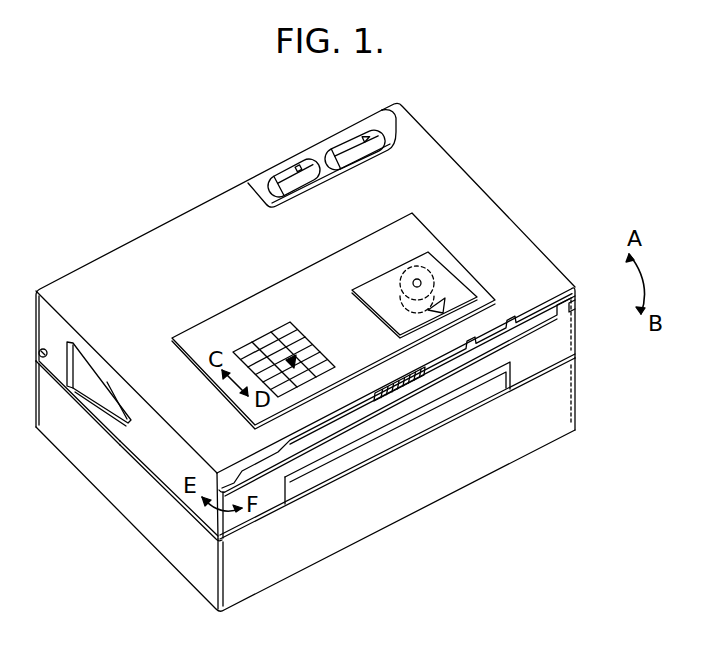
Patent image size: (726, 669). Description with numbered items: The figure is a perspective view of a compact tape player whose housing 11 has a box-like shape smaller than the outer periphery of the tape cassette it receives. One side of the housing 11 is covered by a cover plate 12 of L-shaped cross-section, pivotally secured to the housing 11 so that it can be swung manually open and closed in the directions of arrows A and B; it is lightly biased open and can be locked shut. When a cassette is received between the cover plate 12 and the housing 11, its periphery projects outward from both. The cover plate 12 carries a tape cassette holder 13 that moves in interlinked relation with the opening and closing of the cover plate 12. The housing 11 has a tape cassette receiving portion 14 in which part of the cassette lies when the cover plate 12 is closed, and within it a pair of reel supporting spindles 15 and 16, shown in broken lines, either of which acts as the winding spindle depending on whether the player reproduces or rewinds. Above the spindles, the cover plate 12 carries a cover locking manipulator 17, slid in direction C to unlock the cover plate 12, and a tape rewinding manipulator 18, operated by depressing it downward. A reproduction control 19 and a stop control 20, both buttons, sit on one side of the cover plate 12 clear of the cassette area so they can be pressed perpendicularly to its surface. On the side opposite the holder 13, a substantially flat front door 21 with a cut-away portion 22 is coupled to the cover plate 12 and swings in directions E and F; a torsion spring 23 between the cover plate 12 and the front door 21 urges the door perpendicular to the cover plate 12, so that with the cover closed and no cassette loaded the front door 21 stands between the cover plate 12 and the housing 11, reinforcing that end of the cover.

The housing 11 is at (118, 506).
The cover plate 12 is at (510, 218).
The tape cassette holder 13 is at (92, 403).
The tape cassette receiving portion 14 is at (170, 488).
The reel supporting spindle 15 is at (257, 346).
The reel supporting spindle 16 is at (403, 282).
The cover locking manipulator 17 is at (320, 357).
The tape rewinding manipulator 18 is at (447, 268).
The reproduction control 19 is at (357, 136).
The stop control 20 is at (282, 175).
The front door 21 is at (578, 356).
The cut-away portion 22 is at (313, 468).
The torsion spring 23 is at (392, 386).